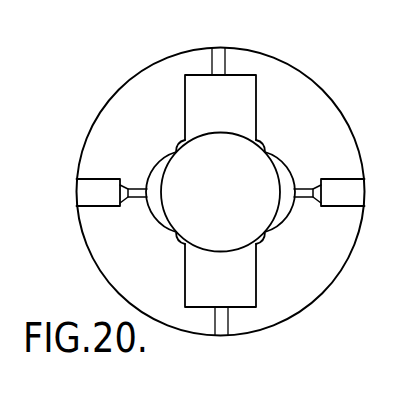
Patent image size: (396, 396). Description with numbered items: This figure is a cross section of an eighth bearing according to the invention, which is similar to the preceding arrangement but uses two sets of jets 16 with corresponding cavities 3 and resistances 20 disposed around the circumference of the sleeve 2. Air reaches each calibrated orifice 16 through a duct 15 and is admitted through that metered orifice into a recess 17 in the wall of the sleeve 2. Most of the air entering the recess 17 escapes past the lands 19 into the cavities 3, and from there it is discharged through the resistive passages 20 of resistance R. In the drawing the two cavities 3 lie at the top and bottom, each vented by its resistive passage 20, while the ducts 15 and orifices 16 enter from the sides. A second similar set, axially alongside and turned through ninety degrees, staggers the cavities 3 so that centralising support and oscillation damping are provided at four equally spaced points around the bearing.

The sleeve 2 is at (297, 118).
The cavity 3 is at (225, 118).
The duct 15 is at (100, 183).
The calibrated orifice 16 is at (133, 199).
The recess 17 is at (151, 193).
The land 19 is at (176, 152).
The resistive passage 20 is at (218, 54).